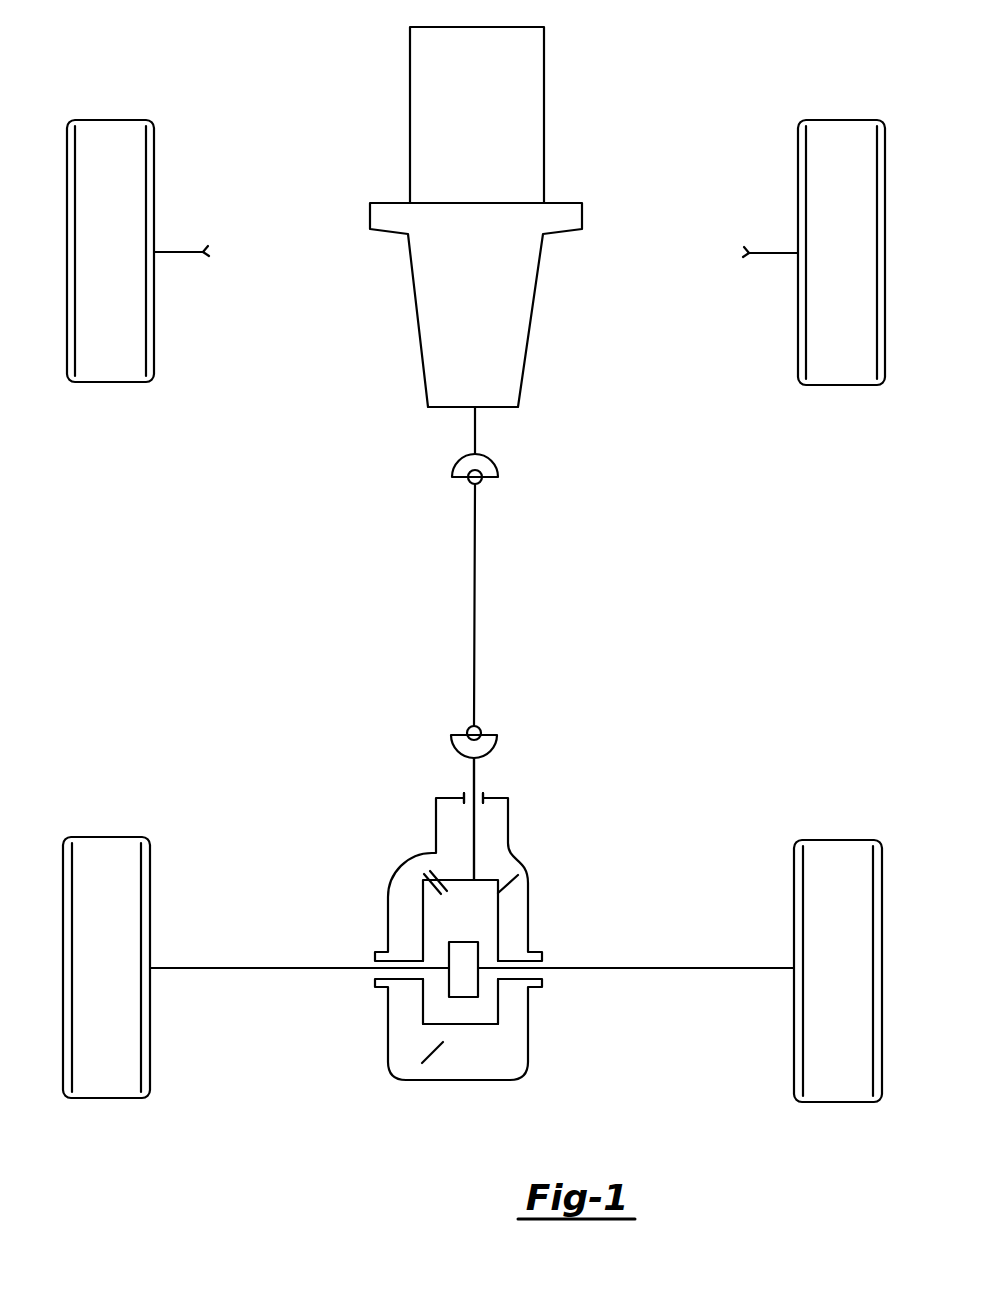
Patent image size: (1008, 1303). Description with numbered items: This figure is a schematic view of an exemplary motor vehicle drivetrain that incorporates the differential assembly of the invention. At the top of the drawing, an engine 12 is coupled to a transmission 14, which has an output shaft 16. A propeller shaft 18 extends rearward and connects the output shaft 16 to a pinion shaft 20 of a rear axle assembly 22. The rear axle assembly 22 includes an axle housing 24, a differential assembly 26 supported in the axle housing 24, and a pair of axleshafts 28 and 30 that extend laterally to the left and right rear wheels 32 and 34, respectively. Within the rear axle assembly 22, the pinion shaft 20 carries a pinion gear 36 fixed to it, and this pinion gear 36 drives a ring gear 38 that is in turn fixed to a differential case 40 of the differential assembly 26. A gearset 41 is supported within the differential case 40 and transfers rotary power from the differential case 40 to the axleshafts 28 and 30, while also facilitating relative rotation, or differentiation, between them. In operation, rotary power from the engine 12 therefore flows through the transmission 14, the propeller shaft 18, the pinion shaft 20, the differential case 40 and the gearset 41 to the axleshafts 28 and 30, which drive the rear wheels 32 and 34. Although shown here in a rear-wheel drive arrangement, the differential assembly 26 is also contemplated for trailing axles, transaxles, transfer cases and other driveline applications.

The engine 12 is at (528, 128).
The transmission 14 is at (532, 322).
The output shaft 16 is at (475, 428).
The propeller shaft 18 is at (474, 628).
The pinion shaft 20 is at (473, 813).
The rear axle assembly 22 is at (463, 939).
The axle housing 24 is at (485, 797).
The differential assembly 26 is at (410, 888).
The axleshaft 28 is at (243, 978).
The axleshaft 30 is at (644, 978).
The rear wheel 32 is at (112, 837).
The rear wheel 34 is at (838, 840).
The pinion gear 36 is at (515, 882).
The ring gear 38 is at (431, 1053).
The differential case 40 is at (472, 1024).
The gearset 41 is at (470, 950).